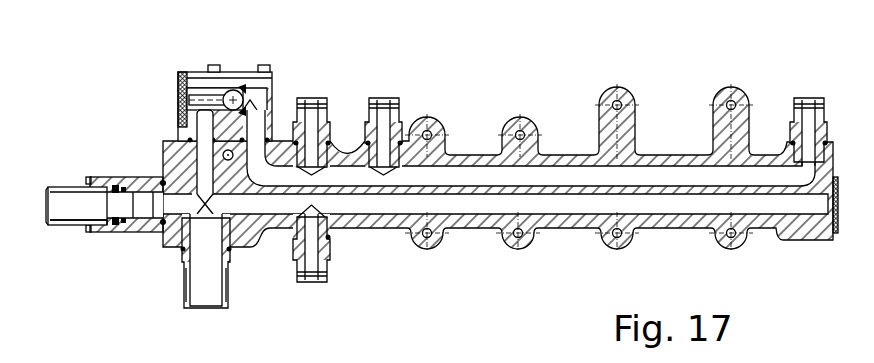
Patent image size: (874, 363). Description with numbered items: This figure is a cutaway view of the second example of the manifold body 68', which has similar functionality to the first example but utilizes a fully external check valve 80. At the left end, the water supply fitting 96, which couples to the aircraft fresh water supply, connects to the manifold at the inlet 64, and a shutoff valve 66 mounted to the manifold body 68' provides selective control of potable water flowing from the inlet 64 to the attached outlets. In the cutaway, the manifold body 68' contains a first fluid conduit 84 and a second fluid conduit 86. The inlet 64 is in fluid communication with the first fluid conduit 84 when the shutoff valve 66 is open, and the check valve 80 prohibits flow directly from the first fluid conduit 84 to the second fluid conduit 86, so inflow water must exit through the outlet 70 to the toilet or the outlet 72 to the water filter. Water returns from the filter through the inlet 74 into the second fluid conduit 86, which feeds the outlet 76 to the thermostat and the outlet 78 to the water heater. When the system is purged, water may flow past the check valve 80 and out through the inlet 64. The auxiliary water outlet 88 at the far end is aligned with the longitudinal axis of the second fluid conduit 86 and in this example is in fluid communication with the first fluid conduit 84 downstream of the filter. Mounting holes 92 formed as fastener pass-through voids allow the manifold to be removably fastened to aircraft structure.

The inlet 64 is at (70, 185).
The shutoff valve 66 is at (137, 230).
The manifold body 68' is at (498, 151).
The outlet 70 is at (220, 308).
The outlet 72 is at (317, 282).
The inlet 74 is at (330, 100).
The outlet 76 is at (823, 117).
The outlet 78 is at (398, 100).
The check valve 80 is at (180, 100).
The first fluid conduit 84 is at (645, 220).
The second fluid conduit 86 is at (667, 157).
The auxiliary water outlet 88 is at (838, 233).
The mounting holes 92 is at (500, 133).
The water supply fitting 96 is at (80, 227).